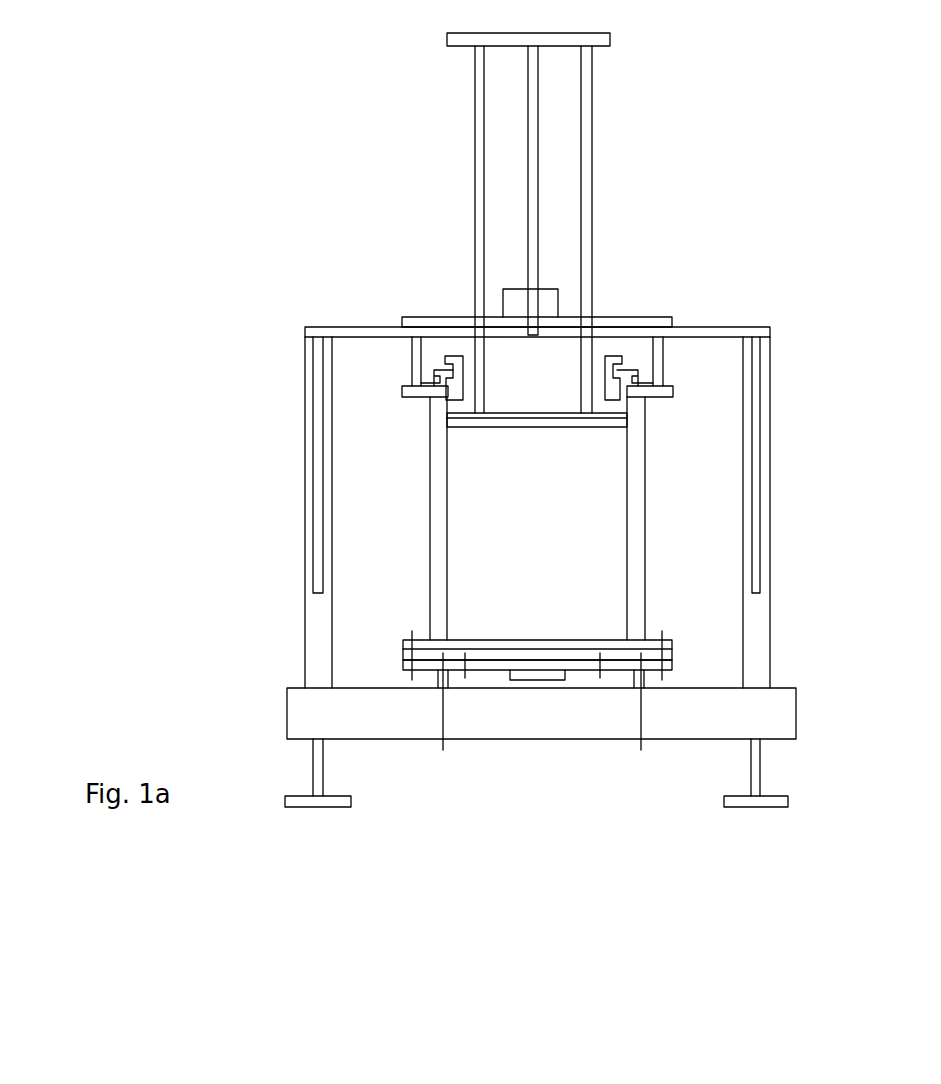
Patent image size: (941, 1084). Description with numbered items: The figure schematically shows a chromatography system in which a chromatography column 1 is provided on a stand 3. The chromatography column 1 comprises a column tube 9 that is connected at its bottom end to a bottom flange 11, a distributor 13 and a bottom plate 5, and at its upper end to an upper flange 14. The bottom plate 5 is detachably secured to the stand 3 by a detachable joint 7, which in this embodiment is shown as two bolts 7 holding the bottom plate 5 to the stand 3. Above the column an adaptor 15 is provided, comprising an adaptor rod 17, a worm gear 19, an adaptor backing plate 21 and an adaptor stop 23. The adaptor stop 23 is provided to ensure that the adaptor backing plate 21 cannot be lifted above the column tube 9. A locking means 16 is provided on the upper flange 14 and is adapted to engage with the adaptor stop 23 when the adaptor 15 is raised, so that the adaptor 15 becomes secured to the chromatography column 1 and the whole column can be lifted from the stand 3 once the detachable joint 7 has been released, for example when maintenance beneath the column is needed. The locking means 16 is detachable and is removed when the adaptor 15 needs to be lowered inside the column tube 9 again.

The chromatography column 1 is at (688, 493).
The stand 3 is at (796, 713).
The bottom plate 5 is at (672, 670).
The detachable joint 7 is at (641, 715).
The column tube 9 is at (644, 460).
The bottom flange 11 is at (652, 637).
The distributor 13 is at (672, 655).
The upper flange 14 is at (672, 388).
The adaptor 15 is at (633, 210).
The locking means 16 is at (455, 368).
The adaptor rod 17 is at (586, 131).
The worm gear 19 is at (533, 90).
The adaptor backing plate 21 is at (506, 427).
The adaptor stop 23 is at (458, 360).